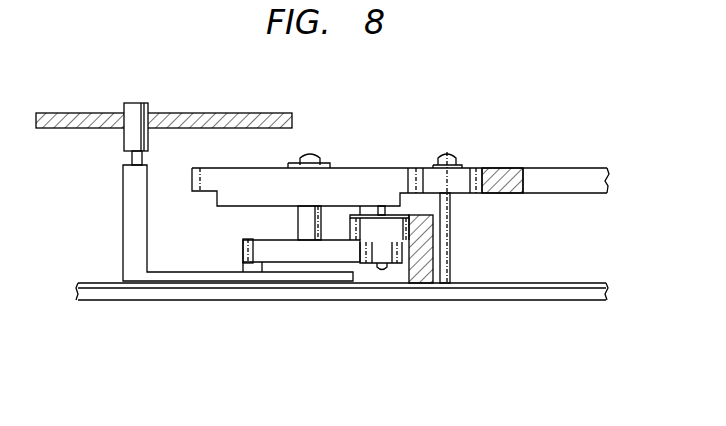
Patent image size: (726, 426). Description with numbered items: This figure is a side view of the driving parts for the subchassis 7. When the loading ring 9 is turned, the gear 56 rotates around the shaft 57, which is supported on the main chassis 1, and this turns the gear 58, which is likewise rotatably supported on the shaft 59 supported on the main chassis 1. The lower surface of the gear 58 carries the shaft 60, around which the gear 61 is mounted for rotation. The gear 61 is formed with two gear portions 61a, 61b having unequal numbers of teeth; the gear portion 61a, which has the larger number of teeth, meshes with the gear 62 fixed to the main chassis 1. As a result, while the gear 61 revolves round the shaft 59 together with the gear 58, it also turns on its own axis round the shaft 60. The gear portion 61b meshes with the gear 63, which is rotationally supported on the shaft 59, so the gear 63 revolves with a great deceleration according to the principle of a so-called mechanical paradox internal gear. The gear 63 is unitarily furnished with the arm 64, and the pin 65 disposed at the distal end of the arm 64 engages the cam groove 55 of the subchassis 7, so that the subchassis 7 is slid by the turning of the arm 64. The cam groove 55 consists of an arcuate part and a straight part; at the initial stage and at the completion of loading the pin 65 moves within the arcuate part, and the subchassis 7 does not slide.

The main chassis 1 is at (512, 301).
The subchassis 7 is at (262, 113).
The loading ring 9 is at (570, 180).
The cam groove 55 is at (151, 113).
The gear 56 is at (455, 162).
The shaft 57 is at (450, 226).
The gear 58 is at (376, 180).
The shaft 59 is at (298, 227).
The shaft 60 is at (386, 212).
The gear 61 is at (368, 266).
The gear portion 61a is at (355, 226).
The gear portion 61b is at (392, 270).
The gear 62 is at (433, 264).
The gear 63 is at (243, 252).
The arm 64 is at (285, 281).
The pin 65 is at (128, 139).